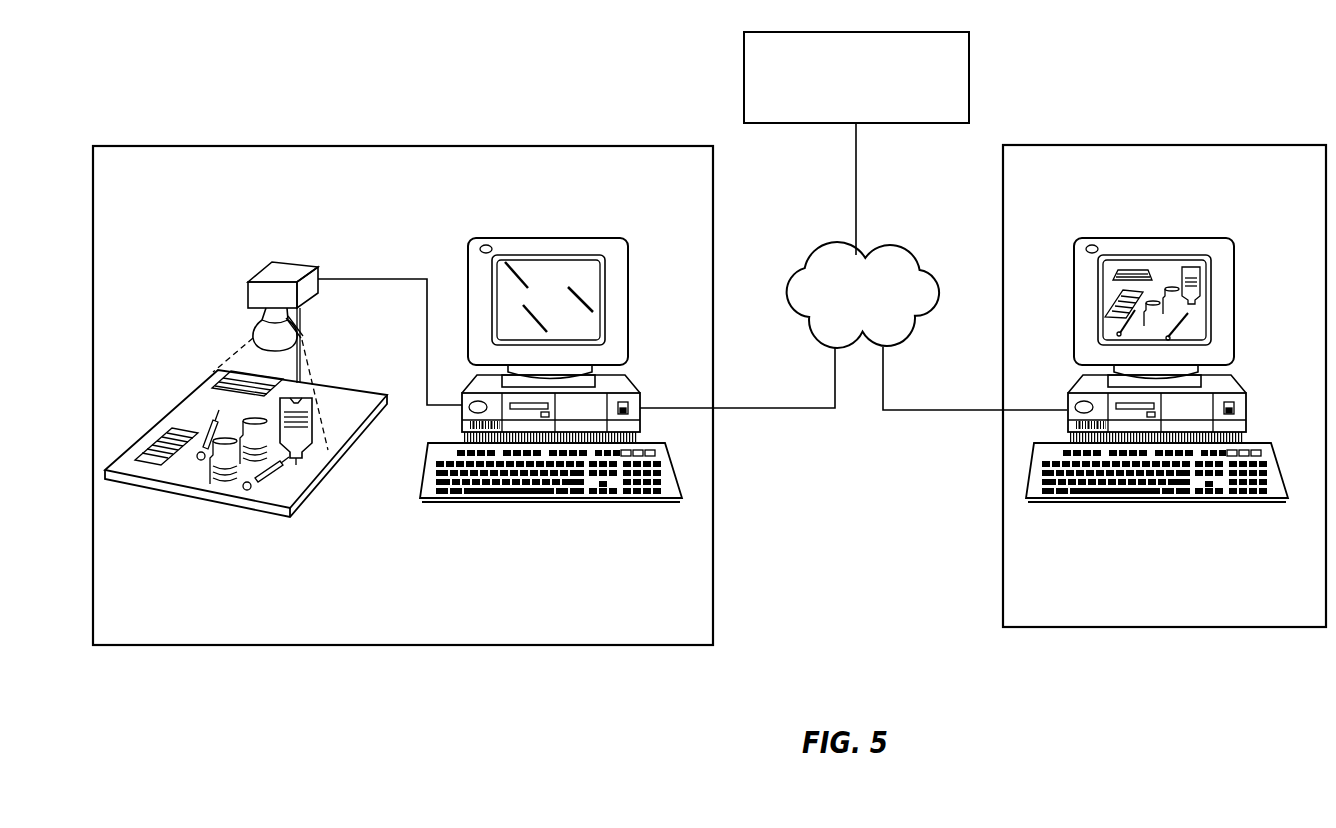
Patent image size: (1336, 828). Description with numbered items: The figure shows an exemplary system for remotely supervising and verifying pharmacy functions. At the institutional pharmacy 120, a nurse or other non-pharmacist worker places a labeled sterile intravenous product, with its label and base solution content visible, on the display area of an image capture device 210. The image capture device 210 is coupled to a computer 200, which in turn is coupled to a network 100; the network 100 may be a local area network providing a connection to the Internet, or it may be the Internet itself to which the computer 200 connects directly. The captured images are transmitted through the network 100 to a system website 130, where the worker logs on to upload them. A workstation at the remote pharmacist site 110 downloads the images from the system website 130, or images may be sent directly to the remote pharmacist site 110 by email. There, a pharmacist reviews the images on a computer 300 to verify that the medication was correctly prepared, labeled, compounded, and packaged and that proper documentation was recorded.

The network 100 is at (873, 316).
The remote pharmacist site 110 is at (1180, 617).
The institutional pharmacy 120 is at (418, 632).
The system website 130 is at (872, 98).
The computer 200 is at (535, 237).
The image capture device 210 is at (296, 255).
The computer 300 is at (1190, 237).